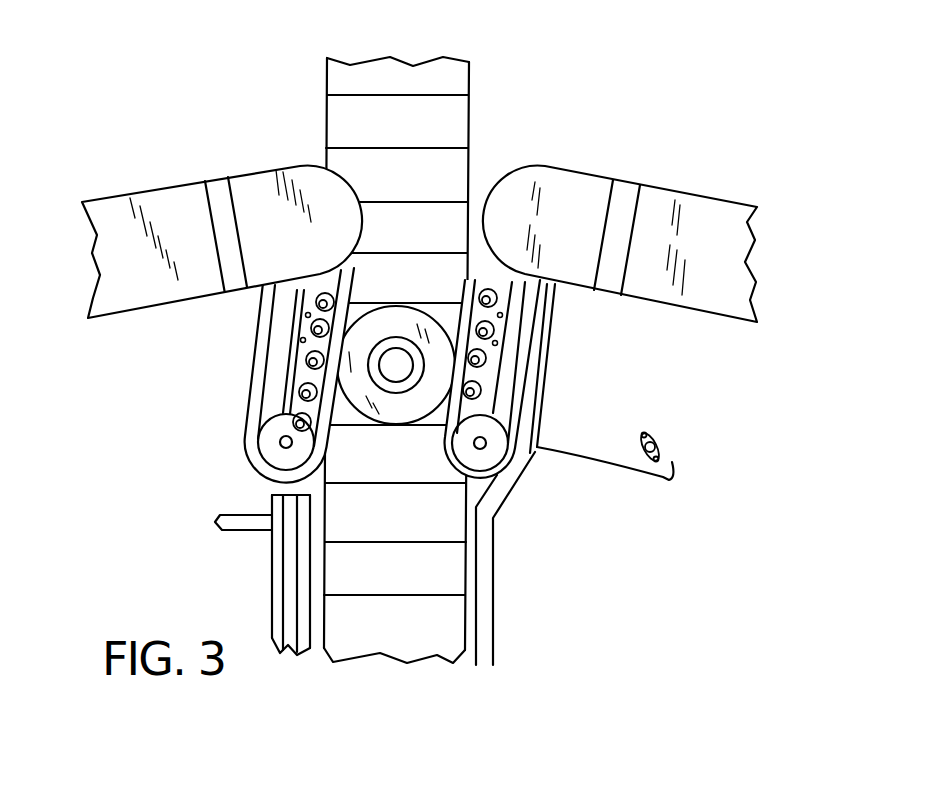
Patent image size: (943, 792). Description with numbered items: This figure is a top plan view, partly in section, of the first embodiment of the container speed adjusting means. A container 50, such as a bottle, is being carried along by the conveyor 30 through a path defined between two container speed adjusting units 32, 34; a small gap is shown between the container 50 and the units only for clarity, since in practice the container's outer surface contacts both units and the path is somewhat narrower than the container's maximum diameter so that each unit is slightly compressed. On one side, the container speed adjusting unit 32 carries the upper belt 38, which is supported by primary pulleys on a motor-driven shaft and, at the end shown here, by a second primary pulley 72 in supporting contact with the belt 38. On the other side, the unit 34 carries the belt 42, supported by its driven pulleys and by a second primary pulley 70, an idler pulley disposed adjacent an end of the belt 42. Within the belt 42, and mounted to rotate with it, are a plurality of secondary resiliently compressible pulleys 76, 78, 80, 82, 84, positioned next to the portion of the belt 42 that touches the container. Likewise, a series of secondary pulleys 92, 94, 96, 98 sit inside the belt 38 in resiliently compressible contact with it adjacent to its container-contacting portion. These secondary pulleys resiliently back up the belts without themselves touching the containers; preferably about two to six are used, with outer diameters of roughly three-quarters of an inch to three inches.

The conveyor 30 is at (397, 639).
The container speed adjusting unit 32 is at (541, 472).
The container speed adjusting unit 34 is at (288, 363).
The belt 38 is at (573, 297).
The belt 42 is at (243, 437).
The container 50 is at (427, 328).
The second primary pulley 70 is at (283, 466).
The second primary pulley 72 is at (481, 484).
The secondary resiliently compressible pulley 76 is at (318, 450).
The secondary resiliently compressible pulley 78 is at (314, 420).
The secondary resiliently compressible pulley 80 is at (312, 364).
The secondary resiliently compressible pulley 82 is at (311, 340).
The secondary resiliently compressible pulley 84 is at (329, 280).
The secondary pulley 92 is at (482, 391).
The secondary pulley 94 is at (487, 360).
The secondary pulley 96 is at (495, 331).
The secondary pulley 98 is at (498, 299).